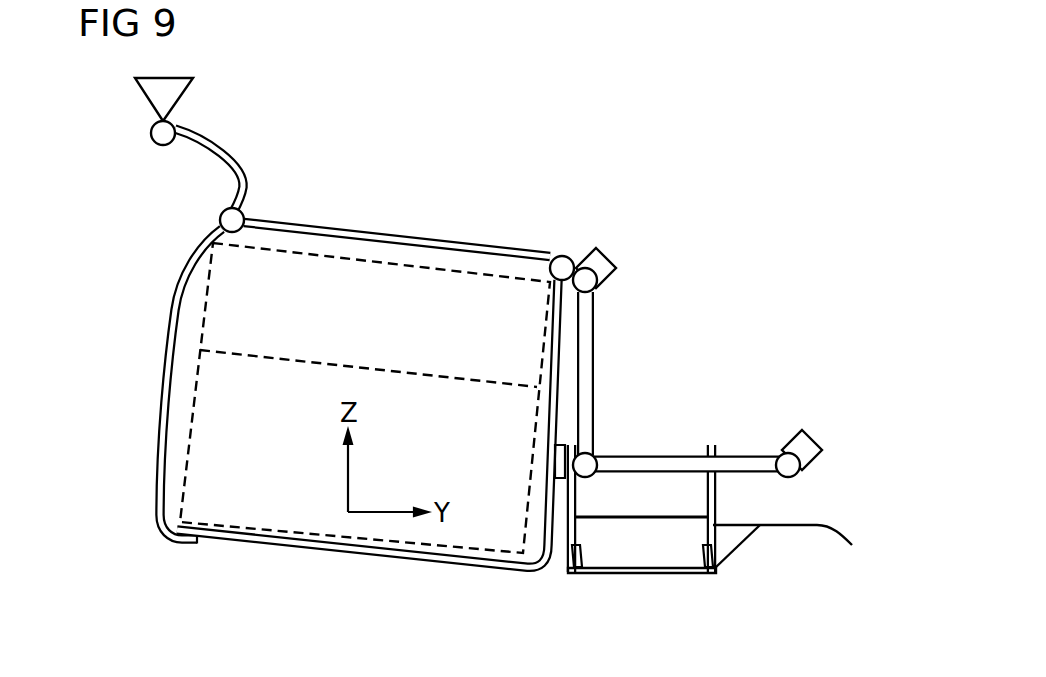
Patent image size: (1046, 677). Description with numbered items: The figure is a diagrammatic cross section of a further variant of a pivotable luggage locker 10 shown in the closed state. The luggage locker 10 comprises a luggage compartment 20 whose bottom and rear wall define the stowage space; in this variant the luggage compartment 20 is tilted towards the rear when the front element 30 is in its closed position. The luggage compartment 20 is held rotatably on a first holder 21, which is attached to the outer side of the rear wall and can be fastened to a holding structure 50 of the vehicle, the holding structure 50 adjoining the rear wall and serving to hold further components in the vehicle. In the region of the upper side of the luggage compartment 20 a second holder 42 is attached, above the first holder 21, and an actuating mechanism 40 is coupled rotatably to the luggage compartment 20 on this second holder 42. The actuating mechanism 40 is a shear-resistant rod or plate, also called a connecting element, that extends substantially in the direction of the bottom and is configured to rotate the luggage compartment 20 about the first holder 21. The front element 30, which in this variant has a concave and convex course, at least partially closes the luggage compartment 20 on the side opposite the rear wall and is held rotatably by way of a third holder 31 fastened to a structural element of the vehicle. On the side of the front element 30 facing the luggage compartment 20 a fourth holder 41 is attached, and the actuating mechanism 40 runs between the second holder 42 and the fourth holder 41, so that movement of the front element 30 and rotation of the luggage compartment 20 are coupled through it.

The luggage locker 10 is at (752, 229).
The luggage compartment 20 is at (316, 400).
The first holder 21 is at (561, 458).
The front element 30 is at (167, 320).
The third holder 31 is at (158, 134).
The actuating mechanism 40 is at (371, 238).
The fourth holder 41 is at (222, 216).
The second holder 42 is at (562, 262).
The holding structure 50 is at (615, 348).